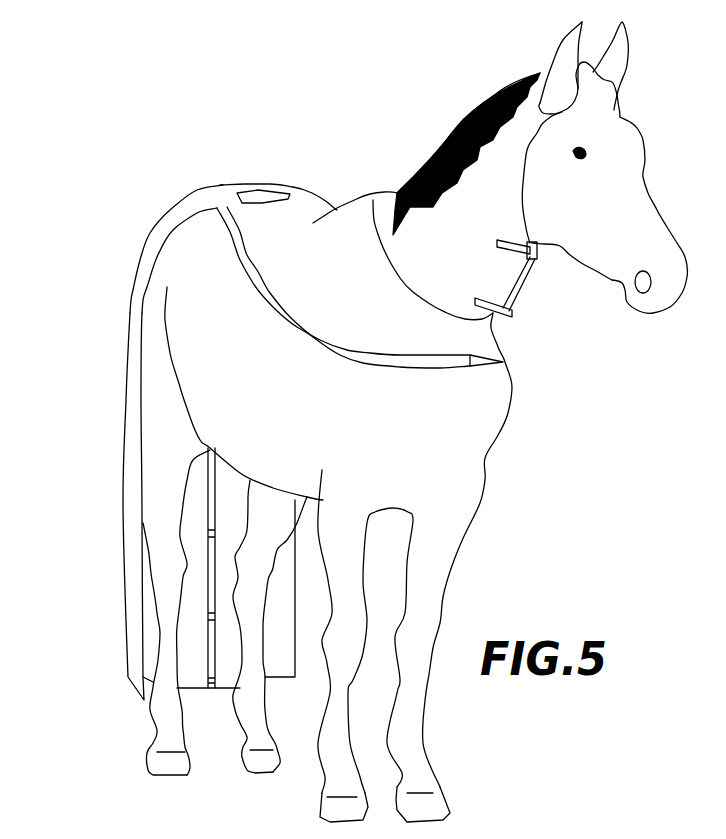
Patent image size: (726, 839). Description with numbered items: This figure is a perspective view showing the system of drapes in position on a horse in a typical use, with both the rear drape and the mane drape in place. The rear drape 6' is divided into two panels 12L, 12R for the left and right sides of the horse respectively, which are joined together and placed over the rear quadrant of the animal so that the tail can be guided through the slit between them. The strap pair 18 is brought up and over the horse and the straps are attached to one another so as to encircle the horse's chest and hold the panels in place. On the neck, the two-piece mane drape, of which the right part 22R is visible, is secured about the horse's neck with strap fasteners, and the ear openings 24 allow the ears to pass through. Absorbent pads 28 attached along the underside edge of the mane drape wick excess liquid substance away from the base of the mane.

The rear drape 6' is at (208, 342).
The right panel 12R is at (123, 417).
The left panel 12L is at (297, 678).
The strap pair 18 is at (503, 363).
The right part of mane drape 22R is at (480, 255).
The ear openings 24 is at (550, 103).
The absorbent pads 28 is at (228, 660).